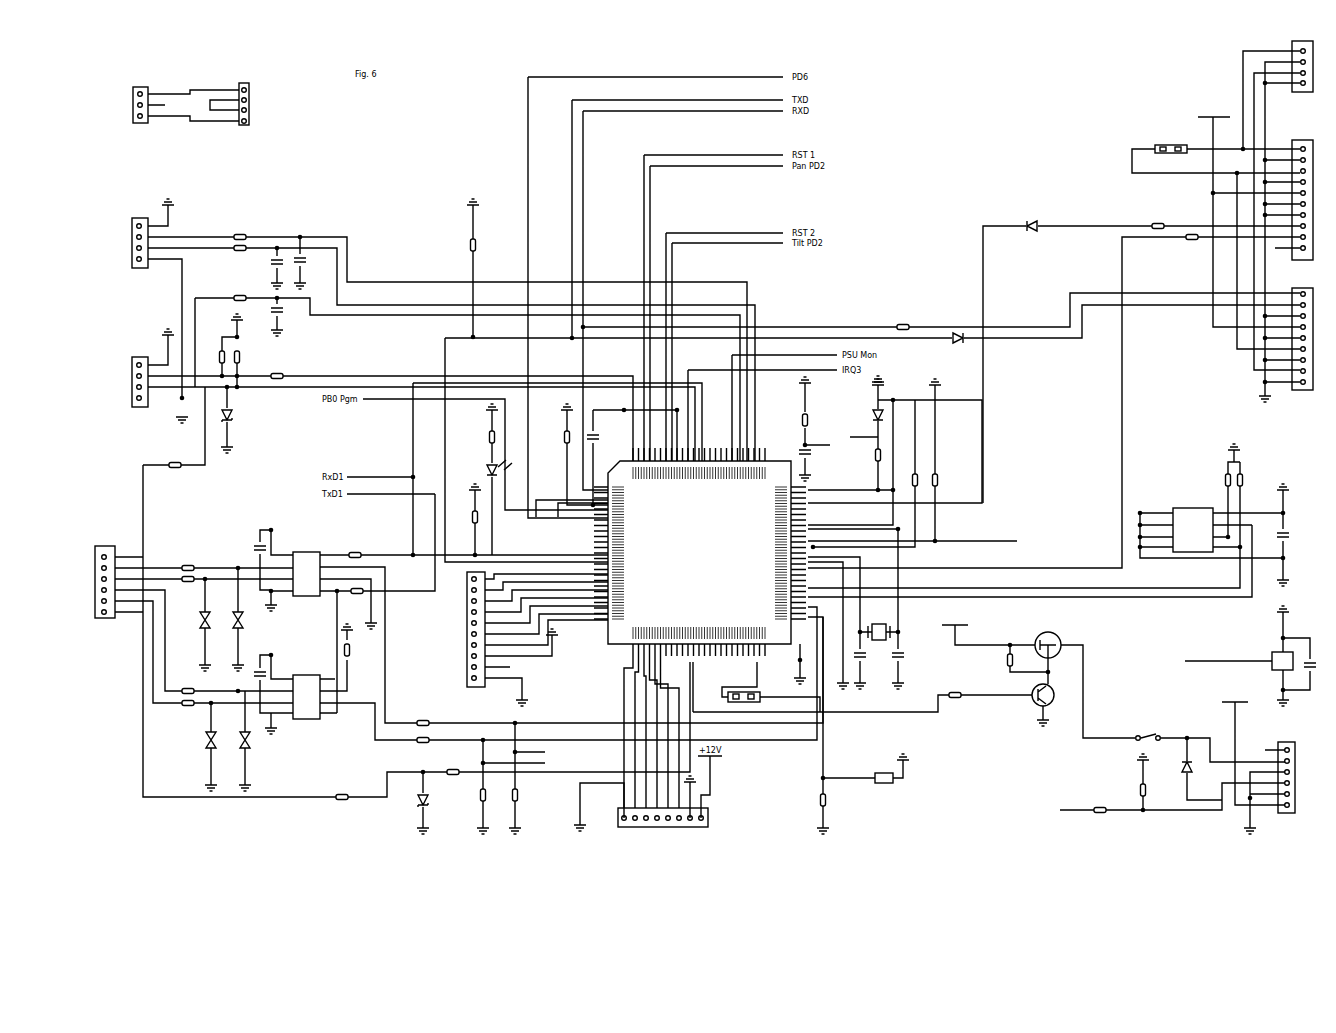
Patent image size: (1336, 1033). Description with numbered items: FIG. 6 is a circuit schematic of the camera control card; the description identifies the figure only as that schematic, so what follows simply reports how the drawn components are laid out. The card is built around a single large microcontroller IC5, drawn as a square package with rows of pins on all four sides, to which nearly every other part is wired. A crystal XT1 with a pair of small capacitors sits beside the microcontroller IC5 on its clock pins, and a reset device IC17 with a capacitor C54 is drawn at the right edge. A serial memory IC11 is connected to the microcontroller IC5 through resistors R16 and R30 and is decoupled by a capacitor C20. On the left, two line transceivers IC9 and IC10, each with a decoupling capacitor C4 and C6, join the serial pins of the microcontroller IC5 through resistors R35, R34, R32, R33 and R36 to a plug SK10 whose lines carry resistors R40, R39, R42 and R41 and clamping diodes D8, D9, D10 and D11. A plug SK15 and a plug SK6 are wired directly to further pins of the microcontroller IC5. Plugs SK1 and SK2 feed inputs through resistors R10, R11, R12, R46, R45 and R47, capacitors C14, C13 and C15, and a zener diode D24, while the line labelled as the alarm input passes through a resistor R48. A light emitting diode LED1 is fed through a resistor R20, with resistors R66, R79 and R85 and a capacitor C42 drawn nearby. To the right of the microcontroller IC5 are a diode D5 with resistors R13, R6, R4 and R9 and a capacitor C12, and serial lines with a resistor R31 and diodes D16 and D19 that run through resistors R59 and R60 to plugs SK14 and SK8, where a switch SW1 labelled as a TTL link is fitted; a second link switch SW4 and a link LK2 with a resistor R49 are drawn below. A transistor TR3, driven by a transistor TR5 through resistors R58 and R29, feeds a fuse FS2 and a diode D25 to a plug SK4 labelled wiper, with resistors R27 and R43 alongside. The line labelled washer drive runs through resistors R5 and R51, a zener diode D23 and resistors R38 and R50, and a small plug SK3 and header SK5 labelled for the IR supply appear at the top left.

The 3 pin plug IR supply SK3 is at (168, 111).
The 90 degree header SK5 is at (262, 109).
The 4 pin plug SK1 is at (136, 245).
The 4 pin plug SK2 is at (134, 382).
The pin plug SK10 is at (104, 583).
The 10 pin plug / camera interface SK15 is at (880, 489).
The 8 pin plug SK6 is at (653, 821).
The 4 pin plug video out SK14 is at (1301, 66).
The 10 pin plug privacy card interface SK8 is at (1297, 200).
The 6 pin plug wiper SK4 is at (1299, 779).
The H8-3048 microcontroller IC5 is at (701, 552).
The MAX483CSA transceiver IC9 is at (308, 565).
The MAX483CSA transceiver IC10 is at (308, 688).
The 24FC512 EEPROM IC11 is at (1192, 520).
The DS1811-R10 reset IC17 is at (1226, 652).
The MJT2955 transistor TR3 is at (1045, 635).
The BSP14 transistor TR5 is at (1057, 692).
The 16MHz crystal XT1 is at (879, 656).
The TLHH3100 LED LED1 is at (469, 463).
The TTL link switch SW1 is at (1188, 137).
The TTL link switch SW4 is at (764, 699).
The 0.35A fuse FS2 is at (1154, 723).
The link LK2 is at (879, 773).
The resistor 15K R10 is at (240, 229).
The resistor 15K R11 is at (240, 260).
The resistor 15K R12 is at (240, 289).
The capacitor 1uF C14 is at (268, 264).
The capacitor 1uF C13 is at (307, 264).
The capacitor 1uF C15 is at (268, 316).
The resistor 4K7 R46 is at (212, 354).
The resistor 4K7 R45 is at (246, 354).
The resistor 100R R47 is at (276, 368).
The zener diode BZY55-C4V7 D24 is at (252, 427).
The resistor 100R R48 is at (161, 468).
The resistor 2K2 R85 is at (483, 244).
The resistor 100 R40 is at (181, 564).
The resistor 100 R39 is at (184, 584).
The resistor 100 R42 is at (181, 687).
The resistor 100 R41 is at (181, 712).
The bidirectional diode D8 is at (218, 620).
The bidirectional diode D9 is at (246, 620).
The bidirectional diode D10 is at (224, 740).
The bidirectional diode D11 is at (254, 740).
The capacitor 100n C4 is at (251, 538).
The capacitor 100n C6 is at (251, 665).
The resistor 1K R35 is at (355, 548).
The resistor 1K R34 is at (356, 602).
The resistor 1K R32 is at (357, 654).
The resistor 100R R5 is at (252, 808).
The resistor 1K R33 is at (439, 728).
The resistor 1K R36 is at (491, 754).
The resistor 100R R51 is at (454, 782).
The zener diode BZY55-C5V1 D23 is at (447, 808).
The resistor 47K R38 is at (492, 796).
The resistor 47K R50 is at (524, 796).
The resistor 600R R20 is at (476, 434).
The resistor 10K R66 is at (461, 531).
The resistor O/C R79 is at (549, 477).
The capacitor 100n C42 is at (602, 428).
The resistor 1K R31 is at (972, 329).
The diode BAT42 D16 is at (956, 348).
The diode BAT42 D19 is at (1026, 235).
The resistor 1K R59 is at (1158, 245).
The resistor 1K R60 is at (1192, 251).
The diode BAS16 D5 is at (860, 429).
The resistor 10K R13 is at (863, 458).
The resistor 10K R6 is at (909, 466).
The resistor 2K2 R4 is at (986, 509).
The resistor 100 R9 is at (803, 430).
The capacitor 10uF C12 is at (814, 447).
The resistor 10K R49 is at (833, 801).
The resistor 10K R16 is at (1215, 474).
The resistor 10K R30 is at (1249, 474).
The capacitor 100n C20 is at (1293, 542).
The resistor 10K R58 is at (999, 660).
The resistor 10K R29 is at (959, 706).
The resistor 1K R27 is at (1070, 803).
The resistor 10K R43 is at (1194, 745).
The diode D25 is at (1191, 767).
The capacitor 100n C54 is at (1316, 693).